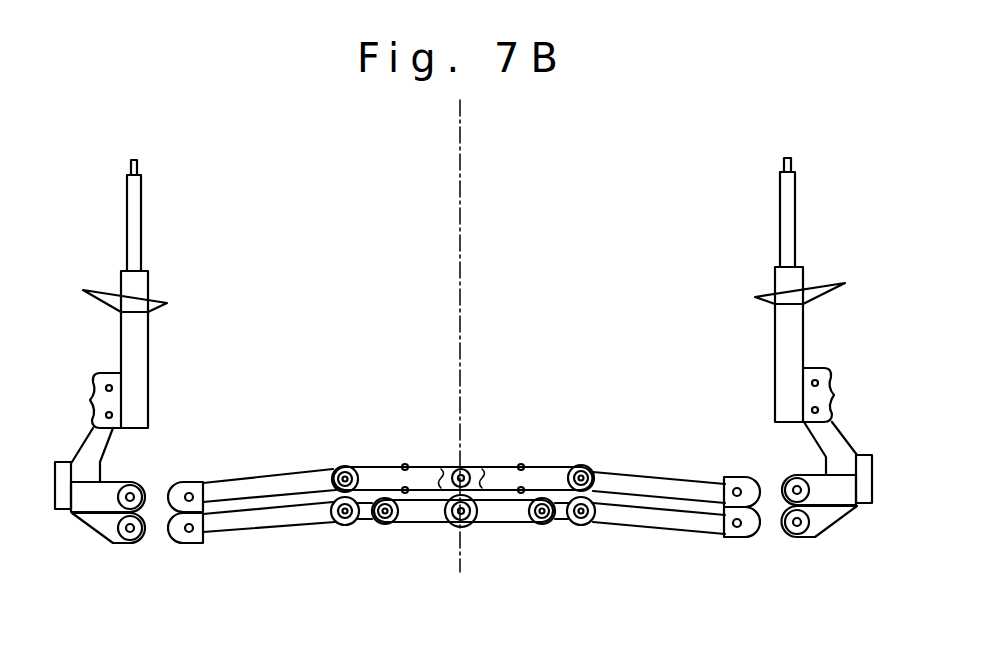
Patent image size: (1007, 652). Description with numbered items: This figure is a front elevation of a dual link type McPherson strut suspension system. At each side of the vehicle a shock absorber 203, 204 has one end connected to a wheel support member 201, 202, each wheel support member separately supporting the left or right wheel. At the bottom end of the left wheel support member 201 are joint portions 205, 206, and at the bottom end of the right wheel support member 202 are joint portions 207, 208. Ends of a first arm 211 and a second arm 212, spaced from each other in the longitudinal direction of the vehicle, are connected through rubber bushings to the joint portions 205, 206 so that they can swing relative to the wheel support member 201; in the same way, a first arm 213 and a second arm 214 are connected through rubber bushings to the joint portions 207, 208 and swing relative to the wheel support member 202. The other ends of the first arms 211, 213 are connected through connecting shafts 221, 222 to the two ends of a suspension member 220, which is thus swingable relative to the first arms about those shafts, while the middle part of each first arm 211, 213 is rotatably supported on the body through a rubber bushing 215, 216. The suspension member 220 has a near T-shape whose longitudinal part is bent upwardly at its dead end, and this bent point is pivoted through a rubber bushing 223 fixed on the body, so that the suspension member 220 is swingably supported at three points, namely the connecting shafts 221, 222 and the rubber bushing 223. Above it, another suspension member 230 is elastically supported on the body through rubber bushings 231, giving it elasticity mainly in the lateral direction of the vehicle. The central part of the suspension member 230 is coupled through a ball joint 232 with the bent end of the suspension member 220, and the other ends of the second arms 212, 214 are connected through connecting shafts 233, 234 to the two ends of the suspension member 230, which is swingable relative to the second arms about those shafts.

The wheel support member 201 is at (60, 462).
The wheel support member 202 is at (865, 458).
The shock absorber 203 is at (140, 172).
The shock absorber 204 is at (790, 172).
The joint portion 205 is at (189, 541).
The joint portion 206 is at (189, 493).
The joint portion 207 is at (797, 540).
The joint portion 208 is at (796, 479).
The first arm 211 is at (262, 525).
The second arm 212 is at (270, 487).
The first arm 213 is at (668, 522).
The second arm 214 is at (655, 487).
The rubber bushing 215 is at (345, 526).
The rubber bushing 216 is at (581, 526).
The suspension member 220 is at (500, 518).
The connecting shaft 221 is at (385, 526).
The connecting shaft 222 is at (542, 526).
The rubber bushing 223 is at (456, 527).
The suspension member 230 is at (545, 472).
The rubber bushing 231 is at (521, 464).
The ball joint 232 is at (463, 468).
The connecting shaft 233 is at (345, 466).
The connecting shaft 234 is at (585, 466).